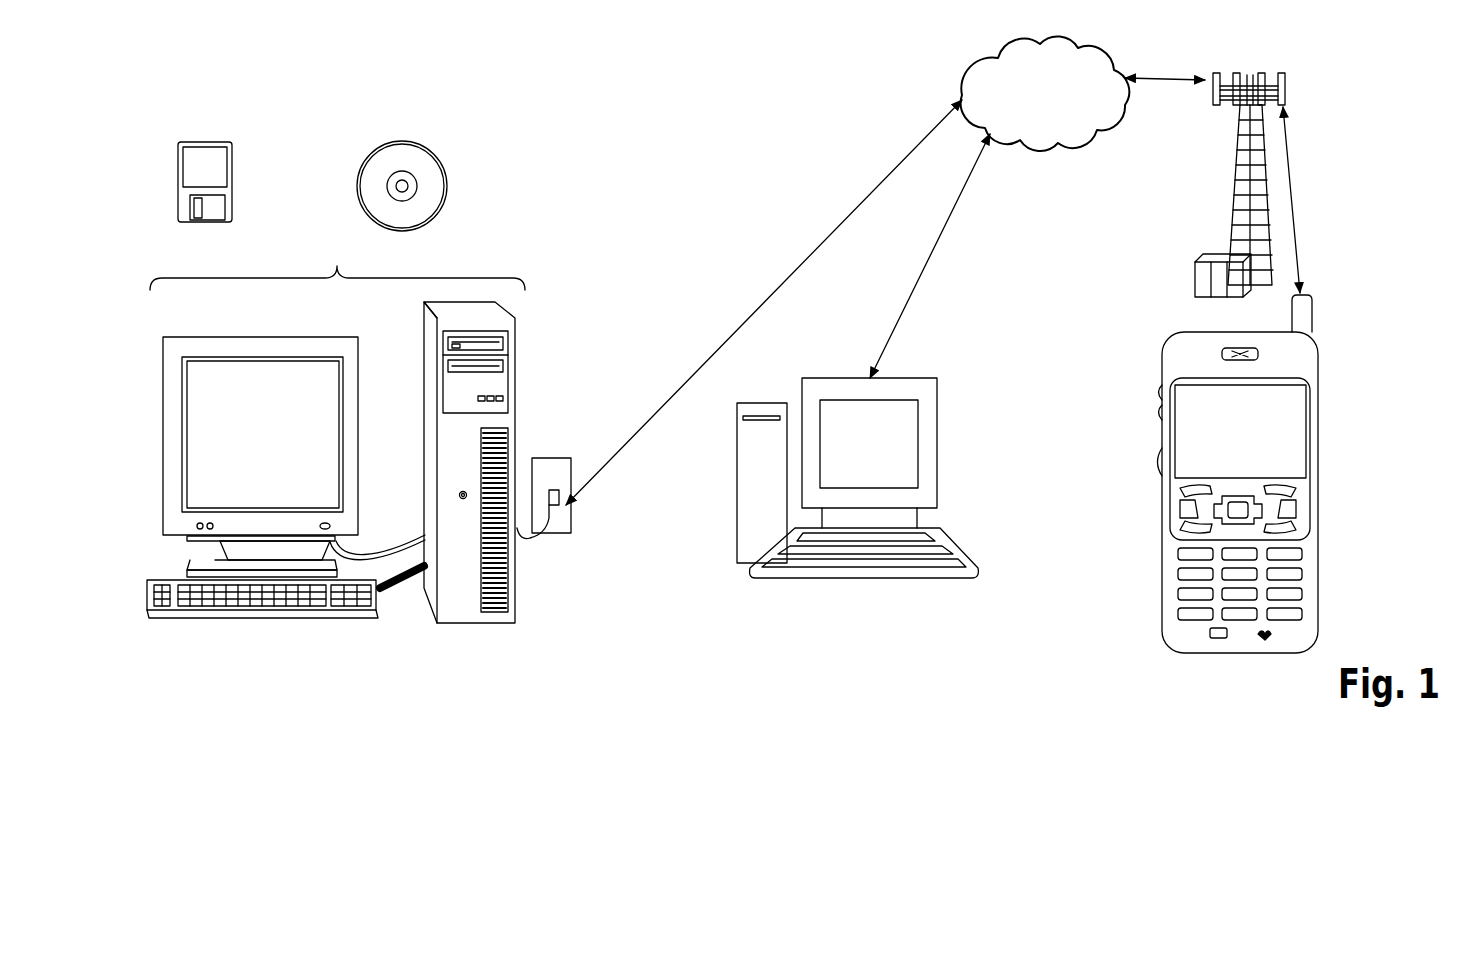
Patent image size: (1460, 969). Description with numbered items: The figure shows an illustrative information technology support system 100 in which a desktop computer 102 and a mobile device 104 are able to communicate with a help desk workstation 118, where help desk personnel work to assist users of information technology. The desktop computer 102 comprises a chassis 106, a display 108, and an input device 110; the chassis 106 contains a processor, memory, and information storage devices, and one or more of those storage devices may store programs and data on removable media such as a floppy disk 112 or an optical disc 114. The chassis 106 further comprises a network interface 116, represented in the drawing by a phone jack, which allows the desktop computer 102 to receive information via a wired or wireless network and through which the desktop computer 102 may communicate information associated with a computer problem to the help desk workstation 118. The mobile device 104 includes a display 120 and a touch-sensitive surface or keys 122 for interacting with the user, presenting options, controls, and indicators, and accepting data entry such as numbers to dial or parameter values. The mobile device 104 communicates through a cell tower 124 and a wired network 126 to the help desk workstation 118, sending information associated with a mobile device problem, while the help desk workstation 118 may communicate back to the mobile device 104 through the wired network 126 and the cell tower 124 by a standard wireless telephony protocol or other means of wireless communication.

The system 100 is at (933, 377).
The desktop computer 102 is at (325, 442).
The mobile device 104 is at (1188, 500).
The chassis 106 is at (423, 493).
The display 108 is at (180, 536).
The input device 110 is at (173, 617).
The floppy disk 112 is at (240, 160).
The optical disc 114 is at (442, 162).
The network interface 116 is at (564, 458).
The help desk workstation 118 is at (744, 525).
The display 120 is at (1186, 425).
The keys 122 is at (1183, 556).
The cell tower 124 is at (1208, 297).
The wired network 126 is at (1010, 142).